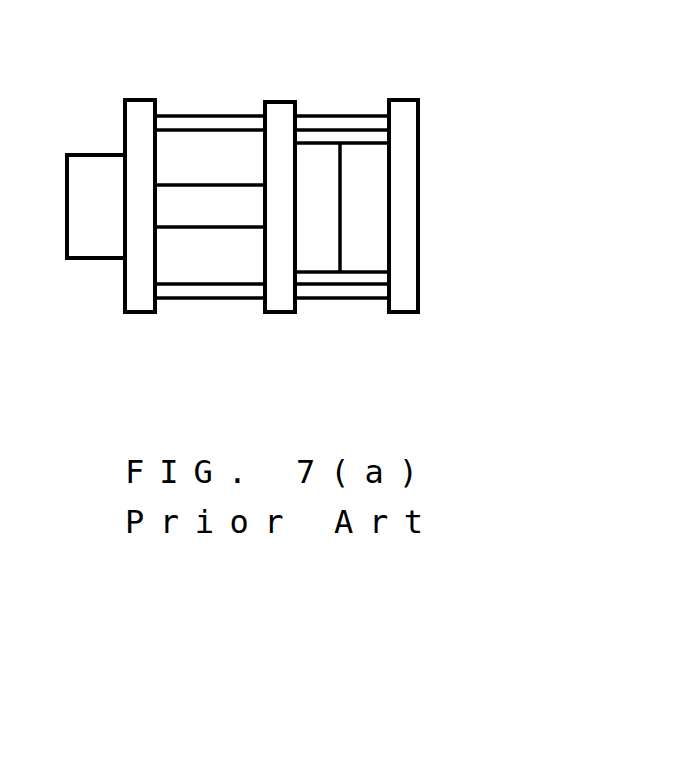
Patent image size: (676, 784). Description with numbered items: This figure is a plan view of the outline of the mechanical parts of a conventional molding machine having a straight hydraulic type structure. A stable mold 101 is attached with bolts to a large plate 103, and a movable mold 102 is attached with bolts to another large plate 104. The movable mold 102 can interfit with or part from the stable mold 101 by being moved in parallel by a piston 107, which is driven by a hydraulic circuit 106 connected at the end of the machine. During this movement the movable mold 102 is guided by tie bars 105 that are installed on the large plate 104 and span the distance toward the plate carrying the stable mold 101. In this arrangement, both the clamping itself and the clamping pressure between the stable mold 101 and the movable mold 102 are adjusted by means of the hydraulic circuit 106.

The stable mold 101 is at (368, 190).
The movable mold 102 is at (323, 222).
The large plate 103 is at (405, 128).
The large plate 104 is at (279, 126).
The tie bars 105 is at (237, 290).
The hydraulic circuit 106 is at (98, 235).
The piston 107 is at (192, 198).